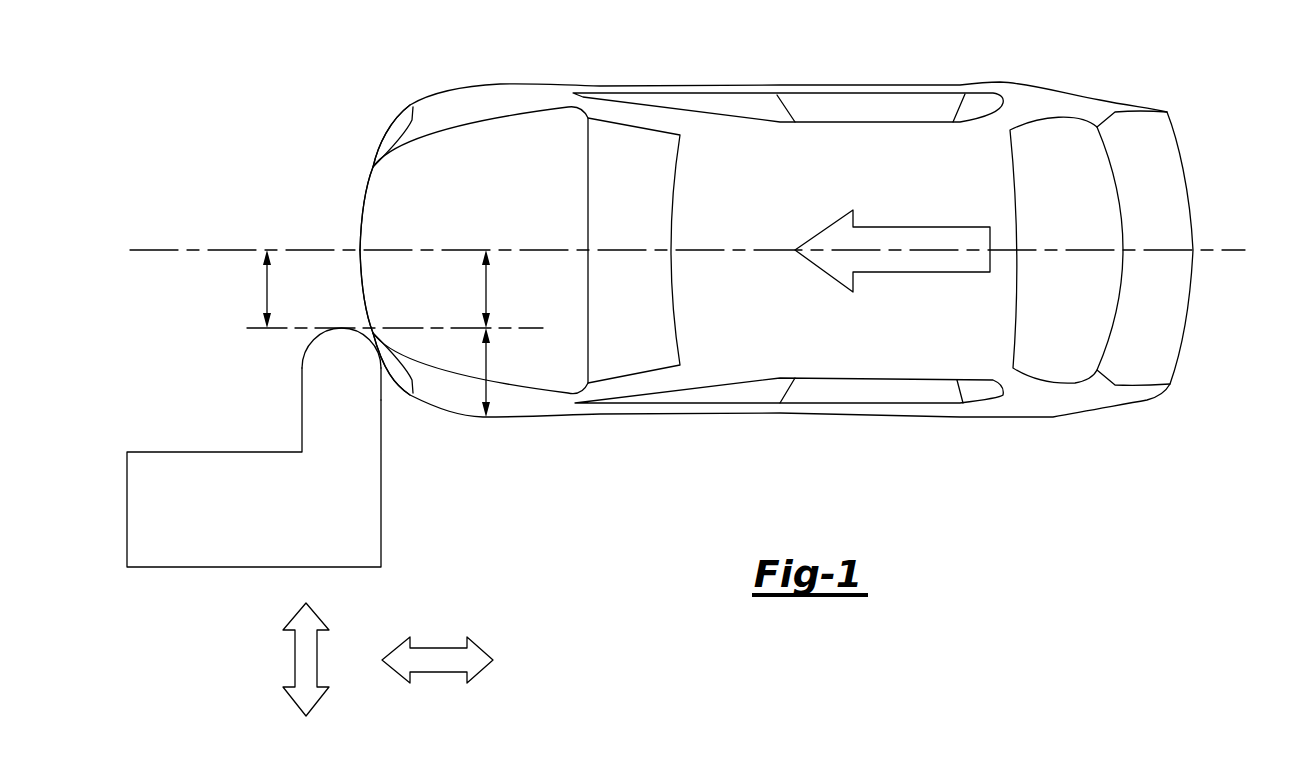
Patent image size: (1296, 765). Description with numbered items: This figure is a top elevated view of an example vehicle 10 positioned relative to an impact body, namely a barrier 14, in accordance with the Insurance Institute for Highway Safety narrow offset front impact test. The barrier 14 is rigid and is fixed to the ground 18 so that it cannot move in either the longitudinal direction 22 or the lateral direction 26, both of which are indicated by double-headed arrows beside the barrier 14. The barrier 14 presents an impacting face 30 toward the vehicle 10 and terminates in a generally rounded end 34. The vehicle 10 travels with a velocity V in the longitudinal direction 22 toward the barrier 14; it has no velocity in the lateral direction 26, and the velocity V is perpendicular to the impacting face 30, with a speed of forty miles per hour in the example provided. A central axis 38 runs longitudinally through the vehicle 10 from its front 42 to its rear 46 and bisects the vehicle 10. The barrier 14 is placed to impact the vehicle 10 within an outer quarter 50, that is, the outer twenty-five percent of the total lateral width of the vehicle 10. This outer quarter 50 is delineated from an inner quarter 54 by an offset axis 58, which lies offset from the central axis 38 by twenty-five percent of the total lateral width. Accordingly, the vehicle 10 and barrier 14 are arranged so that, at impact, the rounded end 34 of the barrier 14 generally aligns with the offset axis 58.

The vehicle 10 is at (826, 60).
The barrier 14 is at (291, 454).
The ground 18 is at (280, 177).
The longitudinal direction 22 is at (437, 648).
The lateral direction 26 is at (295, 660).
The impacting face 30 is at (381, 498).
The rounded end 34 is at (343, 328).
The central axis 38 is at (157, 250).
The front 42 is at (370, 188).
The rear 46 is at (1192, 210).
The outer quarter 50 is at (488, 382).
The inner quarter 54 is at (488, 280).
The offset axis 58 is at (271, 333).
The velocity V is at (896, 227).